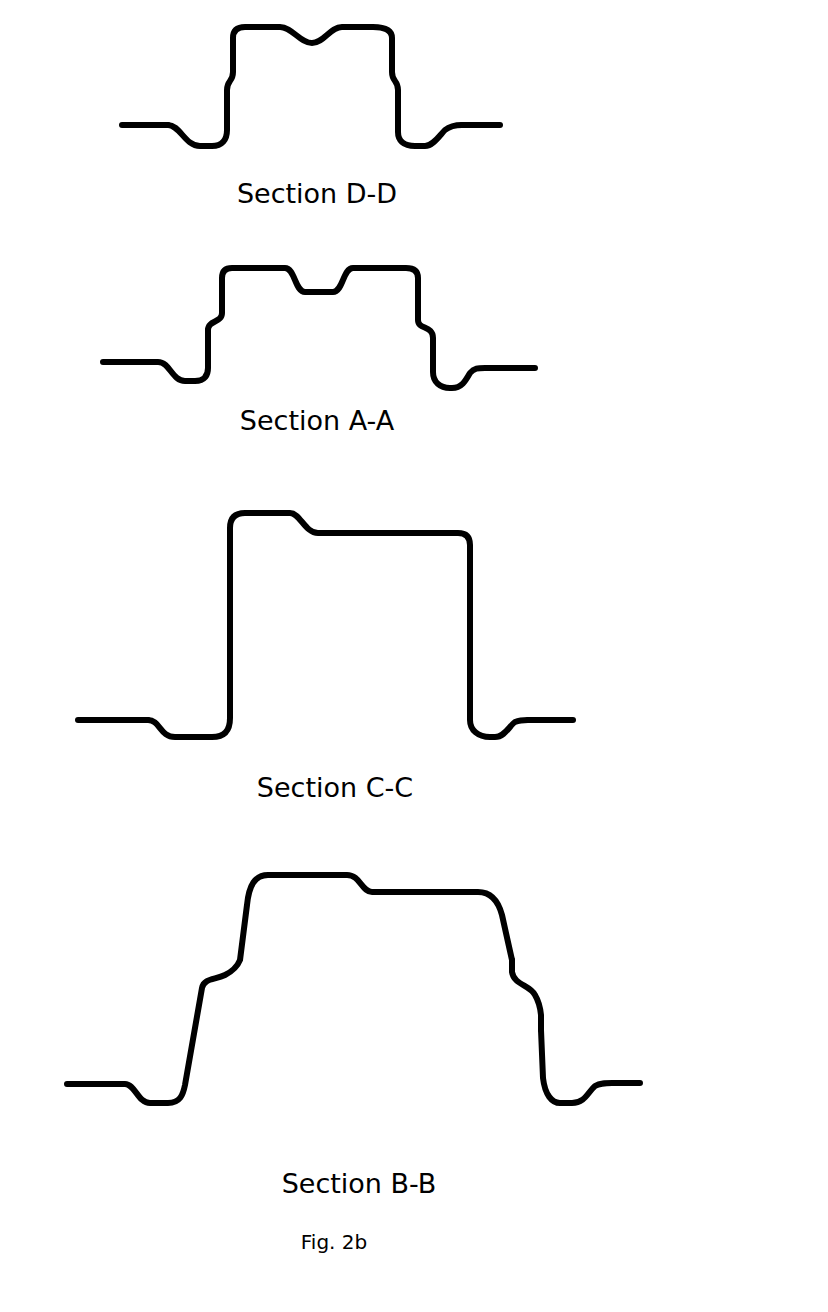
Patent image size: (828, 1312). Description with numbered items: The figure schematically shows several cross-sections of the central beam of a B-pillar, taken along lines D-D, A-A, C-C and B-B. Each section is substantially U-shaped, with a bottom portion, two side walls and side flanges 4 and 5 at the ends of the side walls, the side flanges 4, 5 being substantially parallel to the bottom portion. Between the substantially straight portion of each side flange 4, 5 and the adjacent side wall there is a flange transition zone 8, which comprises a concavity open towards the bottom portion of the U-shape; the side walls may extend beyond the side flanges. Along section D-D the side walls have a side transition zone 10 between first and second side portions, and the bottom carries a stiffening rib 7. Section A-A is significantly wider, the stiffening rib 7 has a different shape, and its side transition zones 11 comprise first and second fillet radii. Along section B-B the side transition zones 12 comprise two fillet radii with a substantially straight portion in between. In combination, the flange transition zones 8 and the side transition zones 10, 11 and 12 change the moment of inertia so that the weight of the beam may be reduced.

The side flange 4 is at (152, 122).
The side flange 5 is at (462, 124).
The stiffening rib 7 is at (315, 62).
The flange transition zone 8 is at (190, 155).
The side transition zone 10 is at (218, 78).
The side transition zone 11 is at (211, 311).
The side transition zone 12 is at (544, 979).